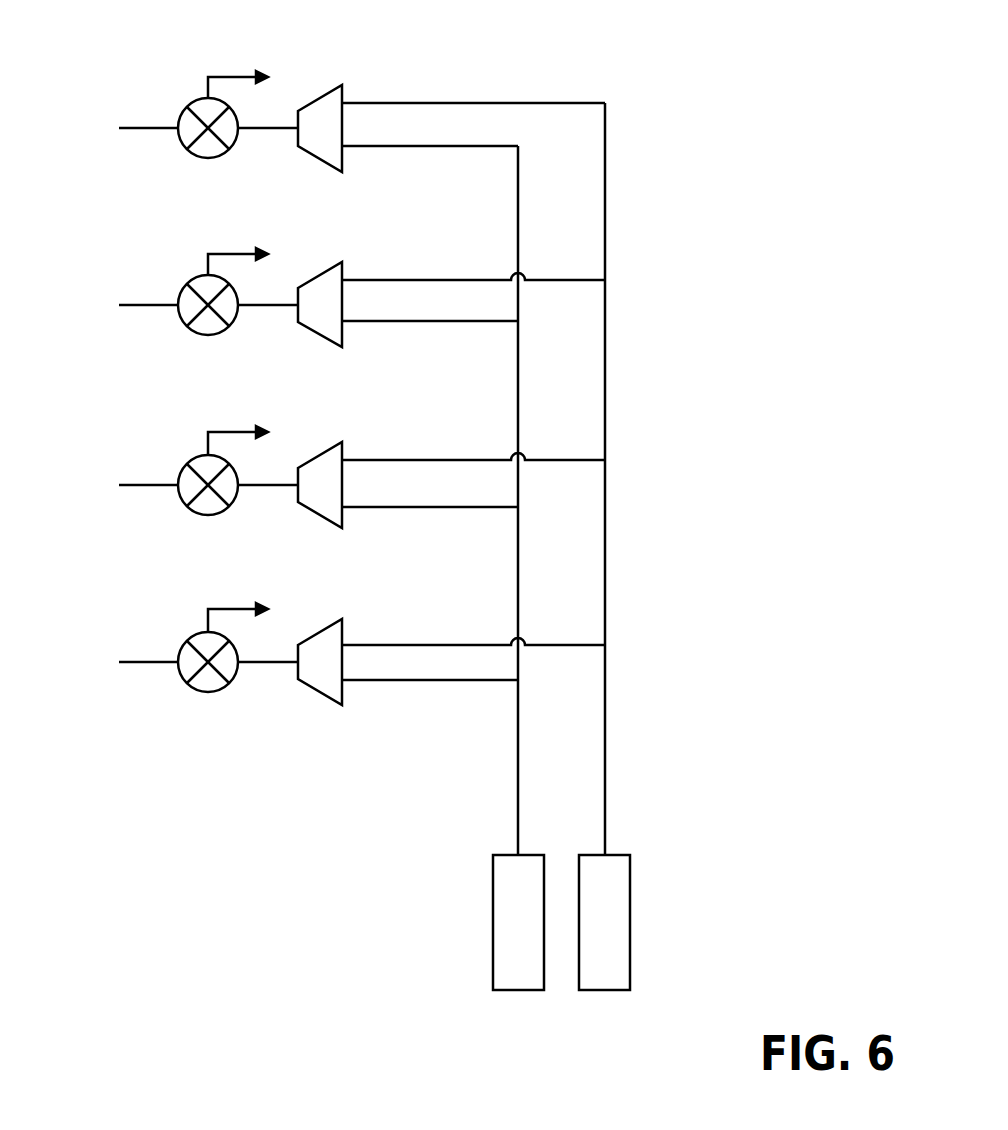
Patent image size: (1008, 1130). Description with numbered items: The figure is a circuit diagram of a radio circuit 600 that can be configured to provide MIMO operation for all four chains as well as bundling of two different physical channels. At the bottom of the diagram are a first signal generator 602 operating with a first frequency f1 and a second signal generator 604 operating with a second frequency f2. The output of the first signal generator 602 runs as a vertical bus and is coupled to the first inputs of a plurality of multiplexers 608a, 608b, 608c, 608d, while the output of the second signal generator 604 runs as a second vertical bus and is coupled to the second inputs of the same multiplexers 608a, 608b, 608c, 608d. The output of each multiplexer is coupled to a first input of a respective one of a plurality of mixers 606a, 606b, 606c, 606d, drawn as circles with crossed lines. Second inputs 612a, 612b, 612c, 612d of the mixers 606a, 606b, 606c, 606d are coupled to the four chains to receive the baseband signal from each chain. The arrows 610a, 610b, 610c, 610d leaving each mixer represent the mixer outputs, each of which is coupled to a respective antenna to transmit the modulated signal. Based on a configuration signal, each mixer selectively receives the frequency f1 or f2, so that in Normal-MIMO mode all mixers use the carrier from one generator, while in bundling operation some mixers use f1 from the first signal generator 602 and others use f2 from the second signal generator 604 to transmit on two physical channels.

The radio circuit 600 is at (246, 903).
The first signal generator 602 is at (493, 920).
The second signal generator 604 is at (630, 877).
The mixer 606a is at (208, 158).
The mixer 606b is at (208, 335).
The mixer 606c is at (208, 515).
The mixer 606d is at (195, 688).
The multiplexer 608a is at (337, 172).
The multiplexer 608b is at (337, 347).
The multiplexer 608c is at (337, 528).
The multiplexer 608d is at (322, 695).
The mixer output of chain 1 610a is at (220, 77).
The mixer output of chain 2 610b is at (220, 254).
The mixer output of chain 3 610c is at (220, 432).
The mixer output of chain 4 610d is at (220, 609).
The second input of mixer 612a is at (120, 130).
The second input of mixer 612b is at (120, 307).
The second input of mixer 612c is at (120, 487).
The second input of mixer 612d is at (120, 664).